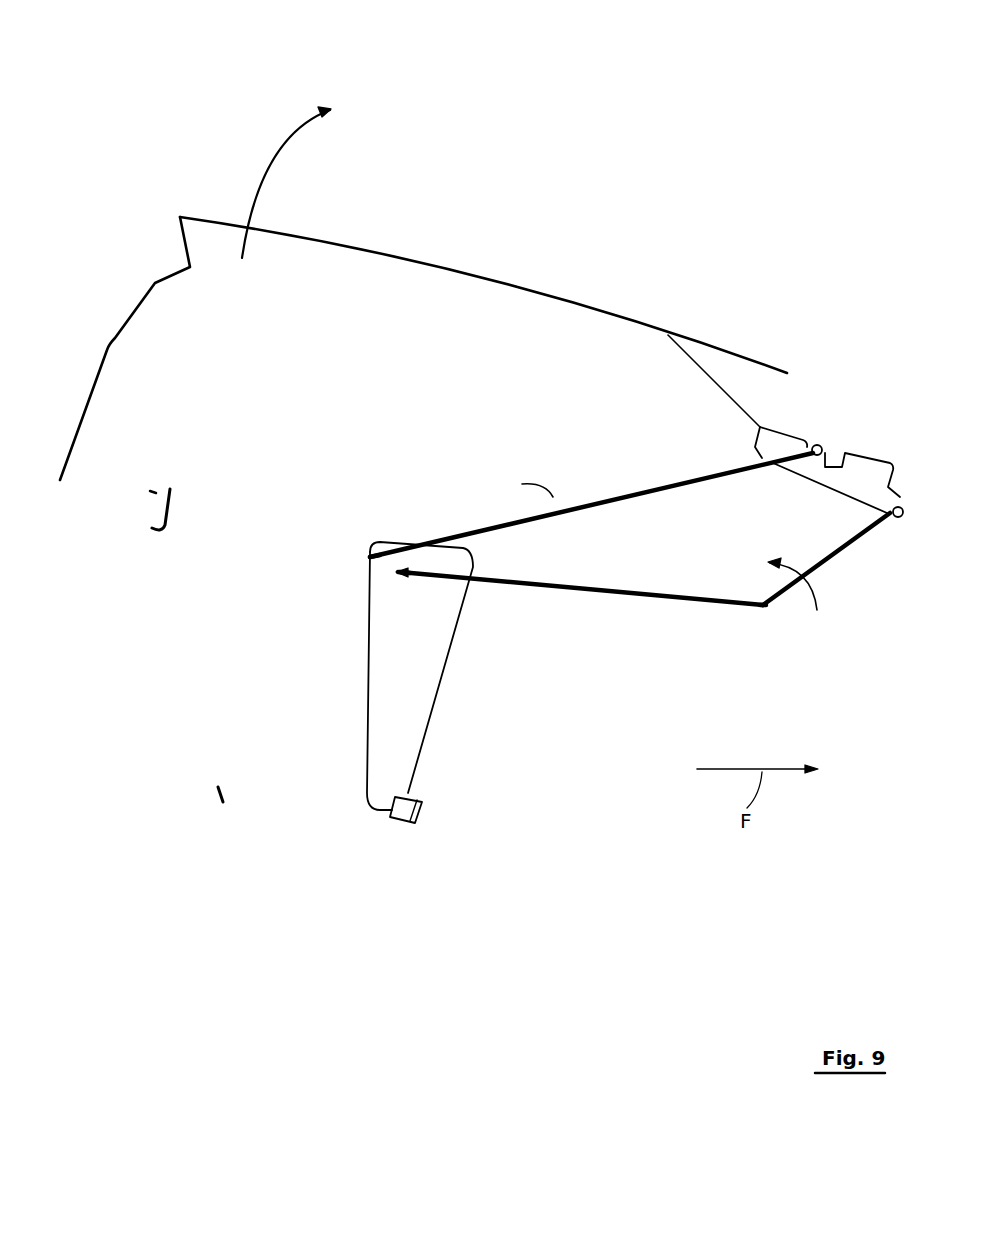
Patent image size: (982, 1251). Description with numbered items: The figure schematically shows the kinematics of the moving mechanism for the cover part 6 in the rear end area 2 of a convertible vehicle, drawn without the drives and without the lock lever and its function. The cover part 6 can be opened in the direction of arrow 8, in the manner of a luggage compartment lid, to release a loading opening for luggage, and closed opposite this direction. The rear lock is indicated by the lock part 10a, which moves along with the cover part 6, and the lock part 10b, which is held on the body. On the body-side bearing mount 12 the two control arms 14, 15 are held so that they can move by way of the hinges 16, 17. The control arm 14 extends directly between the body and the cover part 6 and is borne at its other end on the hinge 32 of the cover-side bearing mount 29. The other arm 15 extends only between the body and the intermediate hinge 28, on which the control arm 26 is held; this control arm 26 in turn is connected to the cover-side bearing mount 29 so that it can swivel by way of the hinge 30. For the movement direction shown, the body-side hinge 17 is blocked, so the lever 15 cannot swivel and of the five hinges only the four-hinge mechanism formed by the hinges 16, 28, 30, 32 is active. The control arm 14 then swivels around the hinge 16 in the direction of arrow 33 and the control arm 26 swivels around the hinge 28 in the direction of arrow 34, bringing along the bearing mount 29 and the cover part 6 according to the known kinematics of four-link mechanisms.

The rear end area 2 is at (517, 121).
The cover part 6 is at (538, 292).
The arrow 8 is at (270, 168).
The lock part 10a is at (170, 476).
The lock part 10b is at (220, 776).
The bearing mount 12 is at (420, 675).
The control arm 14 is at (623, 497).
The control arm 15 is at (613, 590).
The hinge 16 is at (362, 557).
The hinge 17 is at (396, 573).
The control arm 26 is at (832, 548).
The hinge 28 is at (763, 607).
The cover-side bearing mount 29 is at (860, 467).
The hinge 30 is at (903, 500).
The hinge 32 is at (816, 445).
The arrow 33 is at (567, 530).
The arrow 34 is at (810, 587).